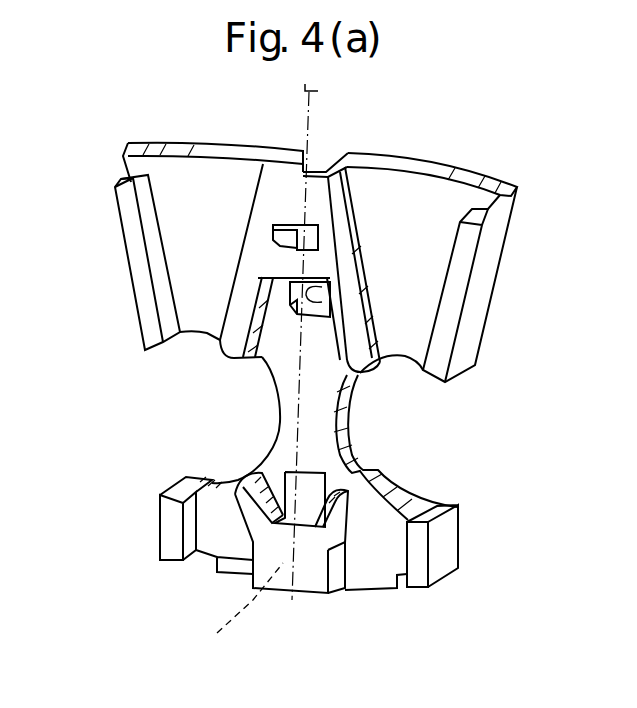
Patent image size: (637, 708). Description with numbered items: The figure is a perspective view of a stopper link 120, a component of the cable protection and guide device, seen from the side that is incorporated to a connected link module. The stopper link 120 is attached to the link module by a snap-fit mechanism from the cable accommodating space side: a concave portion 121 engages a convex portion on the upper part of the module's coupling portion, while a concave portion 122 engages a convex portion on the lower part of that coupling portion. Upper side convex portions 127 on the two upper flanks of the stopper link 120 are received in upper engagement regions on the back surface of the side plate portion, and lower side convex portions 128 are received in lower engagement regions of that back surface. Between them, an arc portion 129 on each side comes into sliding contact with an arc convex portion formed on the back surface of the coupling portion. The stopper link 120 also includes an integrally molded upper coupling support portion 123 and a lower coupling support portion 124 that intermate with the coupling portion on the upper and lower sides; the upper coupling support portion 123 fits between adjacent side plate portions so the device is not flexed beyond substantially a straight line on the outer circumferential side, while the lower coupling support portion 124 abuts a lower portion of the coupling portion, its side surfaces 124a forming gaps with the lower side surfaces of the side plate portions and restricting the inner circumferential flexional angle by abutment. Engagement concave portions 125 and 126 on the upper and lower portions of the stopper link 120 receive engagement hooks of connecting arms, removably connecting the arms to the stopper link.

The stopper link 120 is at (397, 617).
The concave portion 121 is at (312, 288).
The concave portion 122 is at (315, 590).
The upper coupling support portion 123 is at (273, 199).
The lower coupling support portion 124 is at (281, 567).
The side surface 124a is at (220, 560).
The engagement concave portion 125 is at (326, 160).
The engagement concave portion 126 is at (239, 615).
The upper side convex portion 127 is at (142, 285).
The lower side convex portion 128 is at (170, 527).
The arc portion 129 is at (277, 417).